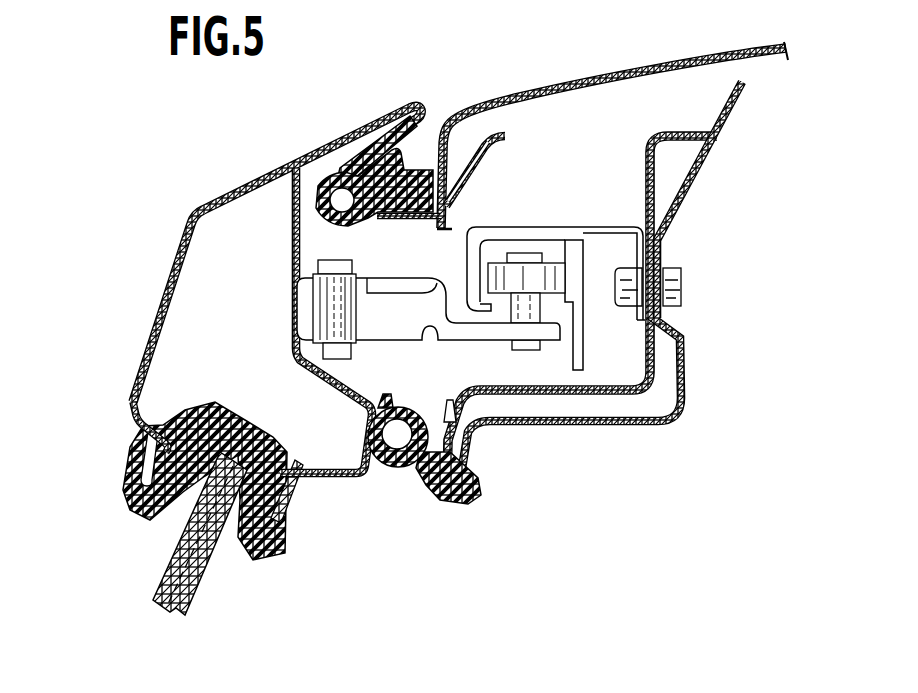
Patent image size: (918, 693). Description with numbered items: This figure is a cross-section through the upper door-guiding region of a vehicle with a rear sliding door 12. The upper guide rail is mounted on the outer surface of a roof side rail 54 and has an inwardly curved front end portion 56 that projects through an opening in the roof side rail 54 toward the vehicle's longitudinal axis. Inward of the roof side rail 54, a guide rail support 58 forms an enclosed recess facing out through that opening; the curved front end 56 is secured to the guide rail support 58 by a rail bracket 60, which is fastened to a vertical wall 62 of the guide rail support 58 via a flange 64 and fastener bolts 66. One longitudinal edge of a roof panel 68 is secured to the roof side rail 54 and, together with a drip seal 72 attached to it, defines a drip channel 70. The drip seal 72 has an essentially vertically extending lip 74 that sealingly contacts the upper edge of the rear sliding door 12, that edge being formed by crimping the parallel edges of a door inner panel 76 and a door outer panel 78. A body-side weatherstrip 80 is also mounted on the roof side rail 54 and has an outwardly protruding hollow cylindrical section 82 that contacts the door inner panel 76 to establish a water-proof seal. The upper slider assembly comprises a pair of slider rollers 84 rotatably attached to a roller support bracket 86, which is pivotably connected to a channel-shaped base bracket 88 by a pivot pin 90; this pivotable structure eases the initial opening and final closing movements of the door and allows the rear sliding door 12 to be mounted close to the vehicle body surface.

The rear sliding door 12 is at (138, 440).
The roof side rail 54 is at (645, 424).
The curved front end portion 56 is at (519, 238).
The guide rail support 58 is at (583, 394).
The rail bracket 60 is at (553, 238).
The vertical wall 62 is at (655, 172).
The flange 64 is at (652, 252).
The fastener bolts 66 is at (683, 288).
The roof panel 68 is at (626, 70).
The drip channel 70 is at (432, 140).
The drip seal 72 is at (332, 178).
The lip 74 is at (389, 112).
The door inner panel 76 is at (298, 240).
The door outer panel 78 is at (175, 270).
The body-side weatherstrip 80 is at (428, 496).
The hollow cylindrical section 82 is at (388, 476).
The slider rollers 84 is at (553, 272).
The roller support bracket 86 is at (457, 332).
The base bracket 88 is at (298, 310).
The pivot pin 90 is at (348, 358).